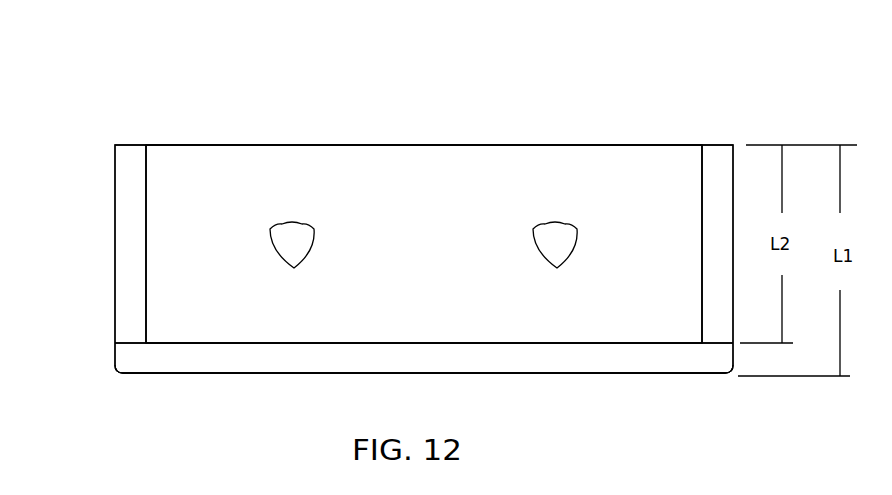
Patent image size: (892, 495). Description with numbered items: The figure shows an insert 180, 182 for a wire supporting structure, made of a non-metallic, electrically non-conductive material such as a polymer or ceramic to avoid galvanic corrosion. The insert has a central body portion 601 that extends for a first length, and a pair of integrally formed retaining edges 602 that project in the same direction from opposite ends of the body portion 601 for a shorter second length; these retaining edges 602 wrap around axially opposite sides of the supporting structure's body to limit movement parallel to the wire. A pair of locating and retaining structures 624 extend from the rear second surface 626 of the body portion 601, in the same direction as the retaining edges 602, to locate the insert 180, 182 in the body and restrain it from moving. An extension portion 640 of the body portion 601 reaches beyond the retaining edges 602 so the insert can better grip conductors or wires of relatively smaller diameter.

The insert 180 is at (258, 101).
The insert 182 is at (424, 259).
The central body portion 601 is at (447, 155).
The retaining edges 602 is at (128, 225).
The locating and retaining structures 624 is at (288, 252).
The second surface 626 is at (416, 295).
The extension portion 640 is at (150, 358).